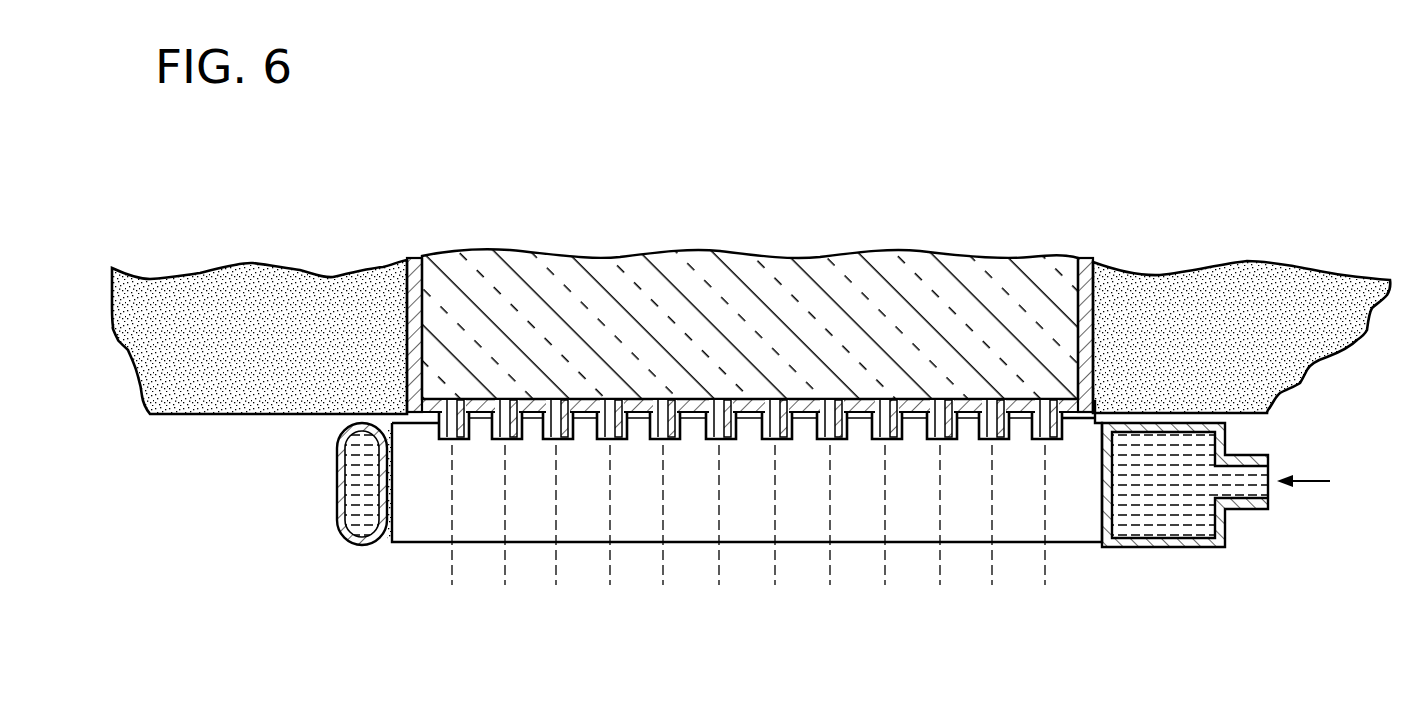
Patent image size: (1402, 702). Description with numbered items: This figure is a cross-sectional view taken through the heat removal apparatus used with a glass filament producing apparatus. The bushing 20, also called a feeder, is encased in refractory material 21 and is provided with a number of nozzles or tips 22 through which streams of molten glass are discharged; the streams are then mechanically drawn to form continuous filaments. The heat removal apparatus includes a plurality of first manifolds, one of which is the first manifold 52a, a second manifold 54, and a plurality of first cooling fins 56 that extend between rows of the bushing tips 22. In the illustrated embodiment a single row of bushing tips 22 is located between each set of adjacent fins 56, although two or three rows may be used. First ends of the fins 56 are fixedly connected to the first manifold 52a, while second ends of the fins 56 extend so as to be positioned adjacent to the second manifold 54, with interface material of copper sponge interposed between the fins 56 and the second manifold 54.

The bushing 20 is at (1080, 258).
The refractory material 21 is at (312, 290).
The bushing tips 22 is at (573, 435).
The second manifold 54 is at (337, 513).
The first cooling fins 56 is at (420, 530).
The first manifold 52a is at (1160, 548).